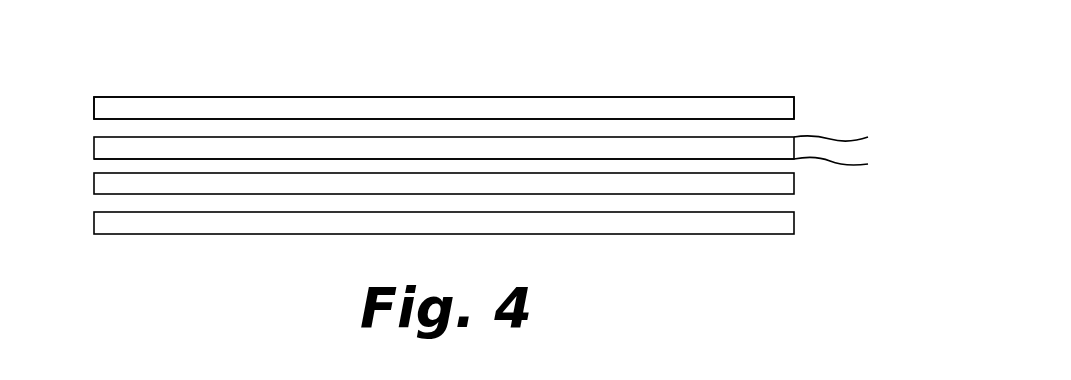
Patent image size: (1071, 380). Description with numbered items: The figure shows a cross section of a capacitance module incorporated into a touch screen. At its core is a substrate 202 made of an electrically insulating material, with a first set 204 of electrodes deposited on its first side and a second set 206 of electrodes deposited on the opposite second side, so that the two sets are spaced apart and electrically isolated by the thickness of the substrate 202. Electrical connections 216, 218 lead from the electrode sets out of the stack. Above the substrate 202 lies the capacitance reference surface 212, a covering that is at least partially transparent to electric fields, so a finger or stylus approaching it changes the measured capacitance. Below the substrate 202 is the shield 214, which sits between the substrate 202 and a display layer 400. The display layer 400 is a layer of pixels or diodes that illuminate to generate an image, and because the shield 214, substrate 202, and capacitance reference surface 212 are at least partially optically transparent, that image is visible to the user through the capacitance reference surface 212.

The substrate 202 is at (402, 150).
The first set of electrodes 204 is at (108, 135).
The second set of electrodes 206 is at (108, 162).
The capacitance reference surface 212 is at (185, 83).
The shield 214 is at (117, 190).
The electrical connection 216 is at (838, 173).
The electrical connection 218 is at (848, 137).
The display layer 400 is at (168, 220).